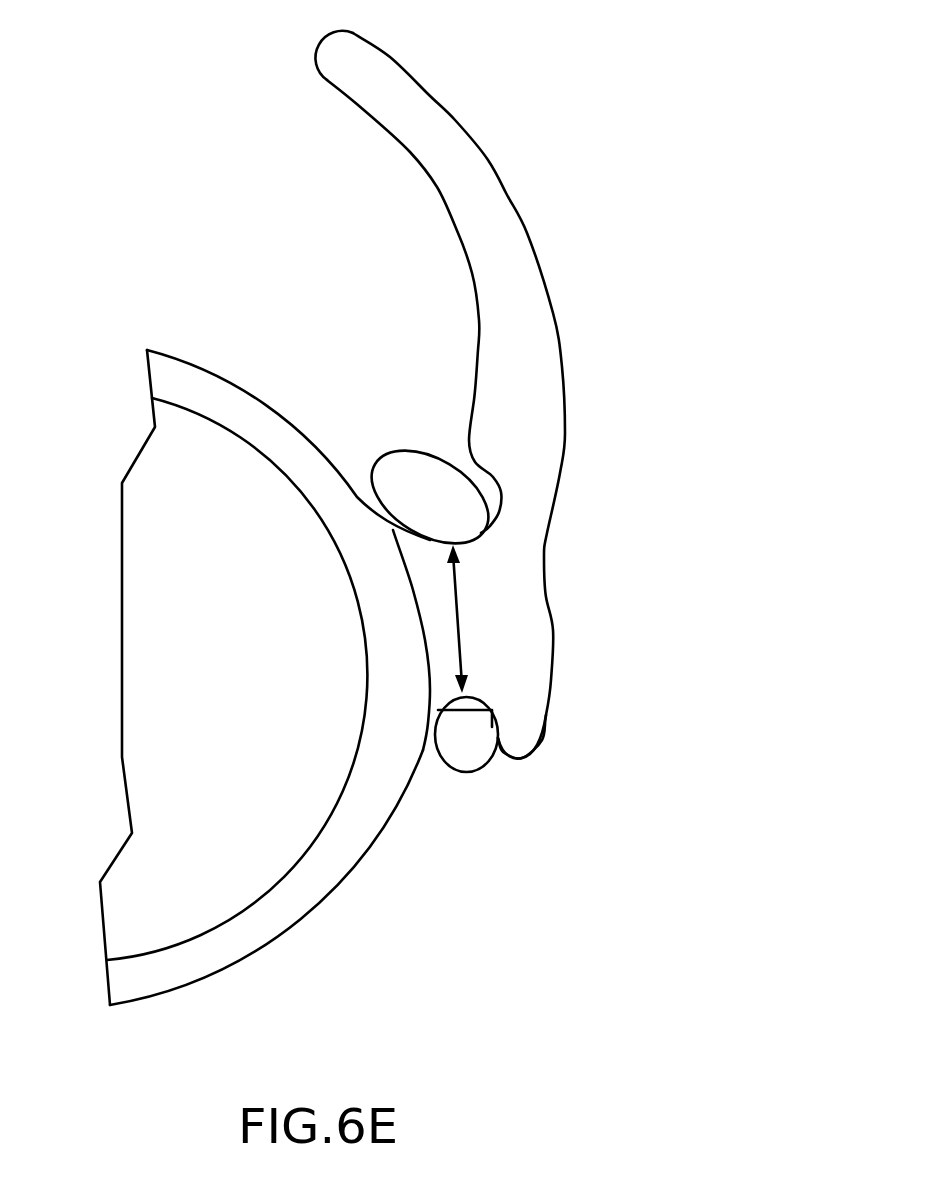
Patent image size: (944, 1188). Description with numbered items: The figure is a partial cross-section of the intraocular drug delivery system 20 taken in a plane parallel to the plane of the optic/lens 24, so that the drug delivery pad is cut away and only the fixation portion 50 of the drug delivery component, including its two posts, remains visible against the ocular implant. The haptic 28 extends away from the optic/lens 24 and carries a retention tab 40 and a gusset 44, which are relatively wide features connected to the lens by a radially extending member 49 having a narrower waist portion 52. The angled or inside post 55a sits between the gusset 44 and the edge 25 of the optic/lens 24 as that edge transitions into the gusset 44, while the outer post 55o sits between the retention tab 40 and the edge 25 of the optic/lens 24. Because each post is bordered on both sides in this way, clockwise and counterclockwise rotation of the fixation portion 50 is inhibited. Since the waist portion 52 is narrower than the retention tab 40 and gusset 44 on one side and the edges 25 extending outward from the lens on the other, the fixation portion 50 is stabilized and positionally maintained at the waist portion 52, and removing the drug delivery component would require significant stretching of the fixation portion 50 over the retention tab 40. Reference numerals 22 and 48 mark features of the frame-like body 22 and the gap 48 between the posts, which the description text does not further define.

The intraocular drug delivery system 20 is at (710, 236).
The frame 22 is at (300, 944).
The optic/lens 24 is at (173, 913).
The edge 25 is at (363, 502).
The haptic 28 is at (300, 78).
The retention tab 40 is at (527, 733).
The gusset 44 is at (493, 475).
The gap 48 is at (495, 673).
The radially extending member 49 is at (470, 583).
The fixation portion 50 is at (522, 790).
The waist portion 52 is at (460, 635).
The angled post 55a is at (447, 485).
The outer post 55o is at (470, 753).